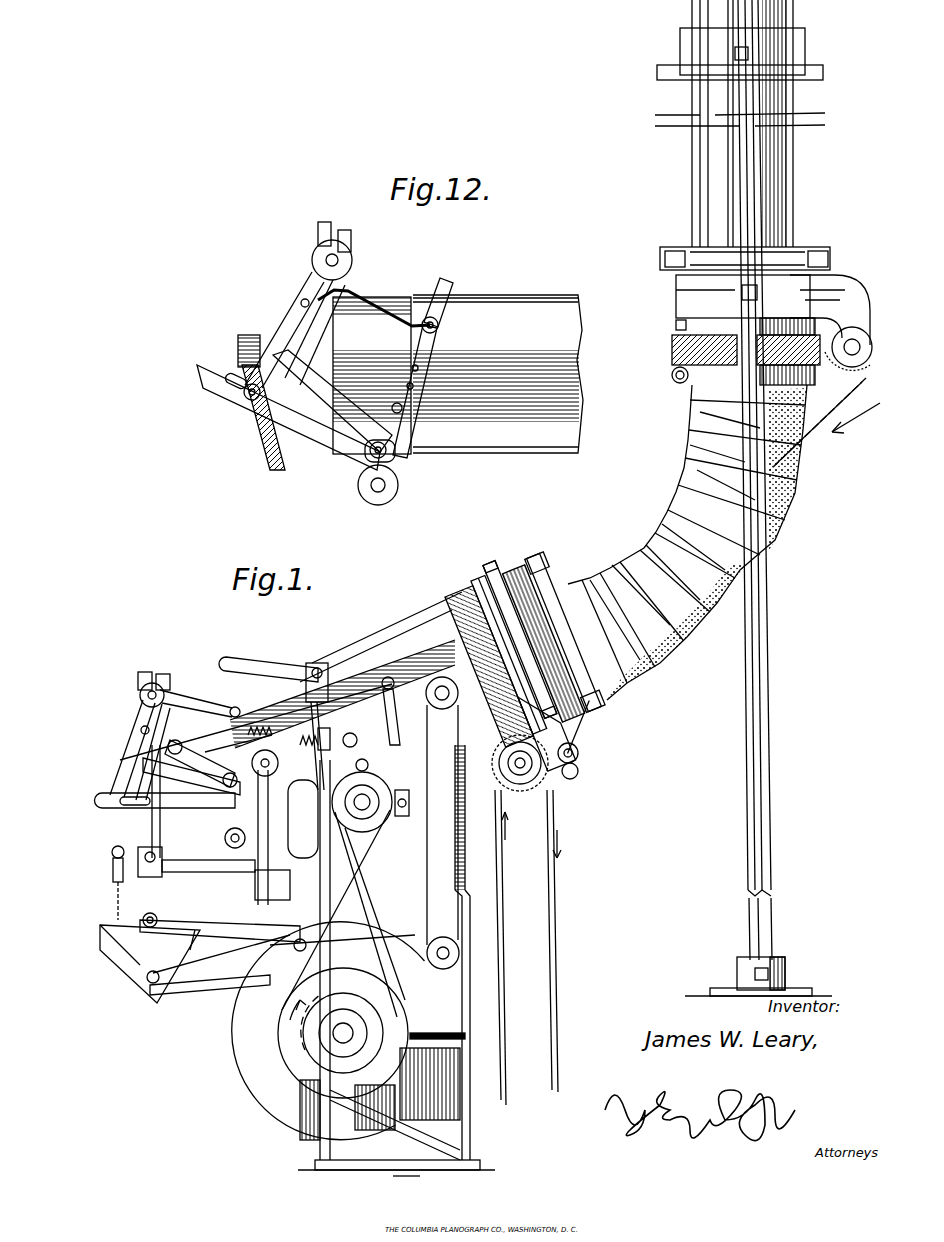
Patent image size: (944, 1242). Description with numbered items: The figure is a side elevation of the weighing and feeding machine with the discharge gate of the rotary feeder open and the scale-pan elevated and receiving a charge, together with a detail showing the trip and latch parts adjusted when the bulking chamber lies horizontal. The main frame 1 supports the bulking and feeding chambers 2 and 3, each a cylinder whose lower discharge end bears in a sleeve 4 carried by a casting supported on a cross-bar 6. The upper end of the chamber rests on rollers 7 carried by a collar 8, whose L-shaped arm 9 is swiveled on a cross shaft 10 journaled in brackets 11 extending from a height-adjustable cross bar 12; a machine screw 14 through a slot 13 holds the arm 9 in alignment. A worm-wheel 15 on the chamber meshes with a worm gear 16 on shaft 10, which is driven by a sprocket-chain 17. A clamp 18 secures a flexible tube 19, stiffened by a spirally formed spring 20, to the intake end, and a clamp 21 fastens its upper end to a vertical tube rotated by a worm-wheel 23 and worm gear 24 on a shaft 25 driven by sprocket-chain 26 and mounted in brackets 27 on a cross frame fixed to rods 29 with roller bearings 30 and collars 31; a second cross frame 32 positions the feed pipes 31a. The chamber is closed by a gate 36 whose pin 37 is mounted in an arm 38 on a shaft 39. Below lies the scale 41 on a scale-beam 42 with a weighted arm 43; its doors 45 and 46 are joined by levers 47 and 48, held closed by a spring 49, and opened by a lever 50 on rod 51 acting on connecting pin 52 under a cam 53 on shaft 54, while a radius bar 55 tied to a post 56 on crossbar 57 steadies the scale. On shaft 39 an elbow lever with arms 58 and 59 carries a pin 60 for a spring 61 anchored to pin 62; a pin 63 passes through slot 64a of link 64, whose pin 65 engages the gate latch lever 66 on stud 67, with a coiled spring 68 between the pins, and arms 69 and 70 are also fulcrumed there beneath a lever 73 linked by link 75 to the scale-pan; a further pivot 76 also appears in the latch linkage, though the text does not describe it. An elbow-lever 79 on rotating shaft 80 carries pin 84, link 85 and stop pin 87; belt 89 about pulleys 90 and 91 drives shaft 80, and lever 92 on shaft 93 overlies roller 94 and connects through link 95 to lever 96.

In FIG. 1, the main frame 1 is at (452, 1052).
In FIG. 1, the bulking chamber 2 is at (291, 748).
In FIG. 12, the bulking chamber 2 is at (498, 374).
In FIG. 1, the feeding chamber 3 is at (509, 655).
In FIG. 12, the sleeve 4 is at (372, 375).
In FIG. 1, the cross-bar 6 is at (291, 819).
In FIG. 12, the cross-bar 6 is at (385, 486).
In FIG. 1, the rollers 7 is at (500, 582).
In FIG. 1, the collar 8 is at (543, 643).
In FIG. 1, the L-shaped arm 9 is at (563, 722).
In FIG. 1, the cross shaft 10 is at (520, 792).
In FIG. 1, the brackets 11 is at (530, 785).
In FIG. 1, the cross bar 12 is at (468, 765).
In FIG. 1, the slot 13 is at (578, 771).
In FIG. 1, the machine screw 14 is at (578, 752).
In FIG. 1, the worm-wheel 15 is at (458, 600).
In FIG. 1, the worm gear 16 is at (556, 795).
In FIG. 1, the sprocket-chain 17 is at (556, 918).
In FIG. 1, the clamp 18 is at (545, 560).
In FIG. 1, the flexible tube 19 is at (600, 565).
In FIG. 1, the spirally formed spring 20 is at (660, 510).
In FIG. 1, the clamp 21 is at (678, 384).
In FIG. 1, the worm-wheel 23 is at (680, 330).
In FIG. 1, the worm gear 24 is at (856, 415).
In FIG. 1, the shaft 25 is at (850, 340).
In FIG. 1, the sprocket-chain 26 is at (815, 436).
In FIG. 1, the brackets 27 is at (842, 290).
In FIG. 1, the fixed rods 29 is at (740, 143).
In FIG. 1, the roller bearings 30 is at (676, 296).
In FIG. 1, the collars 31 is at (680, 255).
In FIG. 1, the feed pipes 31a is at (710, 183).
In FIG. 1, the second cross frame 32 is at (728, 68).
In FIG. 1, the gate 36 is at (152, 820).
In FIG. 12, the gate 36 is at (270, 432).
In FIG. 12, the pin 37 is at (238, 344).
In FIG. 1, the arm or lever 38 is at (138, 700).
In FIG. 12, the arm or lever 38 is at (280, 300).
In FIG. 1, the shaft 39 is at (152, 683).
In FIG. 12, the shaft 39 is at (340, 258).
In FIG. 1, the scale 41 is at (170, 860).
In FIG. 1, the scale-beam 42 is at (186, 890).
In FIG. 1, the arm 43 is at (339, 913).
In FIG. 1, the door 45 is at (125, 975).
In FIG. 1, the door 46 is at (221, 956).
In FIG. 1, the lever 47 is at (125, 945).
In FIG. 1, the lever 48 is at (177, 942).
In FIG. 1, the spring 49 is at (128, 910).
In FIG. 1, the lever 50 is at (220, 927).
In FIG. 1, the rod 51 is at (450, 955).
In FIG. 1, the connecting pin 52 is at (156, 915).
In FIG. 1, the cam 53 is at (240, 1040).
In FIG. 1, the shaft 54 is at (340, 1033).
In FIG. 1, the radius bar 55 is at (205, 985).
In FIG. 1, the post 56 is at (270, 943).
In FIG. 1, the crossbar 57 is at (262, 888).
In FIG. 1, the arm 58 is at (150, 745).
In FIG. 12, the arm 58 is at (295, 322).
In FIG. 1, the arm 59 is at (195, 695).
In FIG. 12, the arm 59 is at (380, 290).
In FIG. 1, the pin 60 is at (143, 727).
In FIG. 12, the pin 60 is at (302, 298).
In FIG. 1, the spring 61 is at (260, 721).
In FIG. 1, the pin 62 is at (298, 725).
In FIG. 12, the pin 63 is at (244, 395).
In FIG. 1, the link 64 is at (165, 804).
In FIG. 12, the link 64 is at (197, 378).
In FIG. 12, the slot 64a is at (225, 381).
In FIG. 1, the pin 65 is at (267, 830).
In FIG. 12, the pin 65 is at (368, 460).
In FIG. 1, the gate latch lever 66 is at (233, 734).
In FIG. 12, the gate latch lever 66 is at (420, 350).
In FIG. 12, the stud 67 is at (392, 408).
In FIG. 1, the coiled spring 68 is at (329, 720).
In FIG. 12, the arm 69 is at (405, 430).
In FIG. 1, the arm 70 is at (191, 779).
In FIG. 12, the arm 70 is at (332, 401).
In FIG. 1, the lever 73 is at (201, 763).
In FIG. 1, the link 75 is at (237, 848).
In FIG. 1, the pivot 76 is at (240, 711).
In FIG. 12, the pivot 76 is at (440, 326).
In FIG. 1, the elbow-lever 79 is at (368, 768).
In FIG. 1, the rotating shaft 80 is at (355, 805).
In FIG. 1, the pin 84 is at (409, 800).
In FIG. 1, the link 85 is at (420, 711).
In FIG. 1, the stop pin 87 is at (352, 732).
In FIG. 1, the belt 89 is at (368, 900).
In FIG. 1, the pulley 90 is at (388, 818).
In FIG. 1, the pulley 91 is at (300, 1068).
In FIG. 1, the lever 92 is at (285, 665).
In FIG. 1, the shaft 93 is at (442, 825).
In FIG. 12, the roller 94 is at (440, 318).
In FIG. 1, the link 95 is at (295, 805).
In FIG. 1, the lever 96 is at (385, 940).